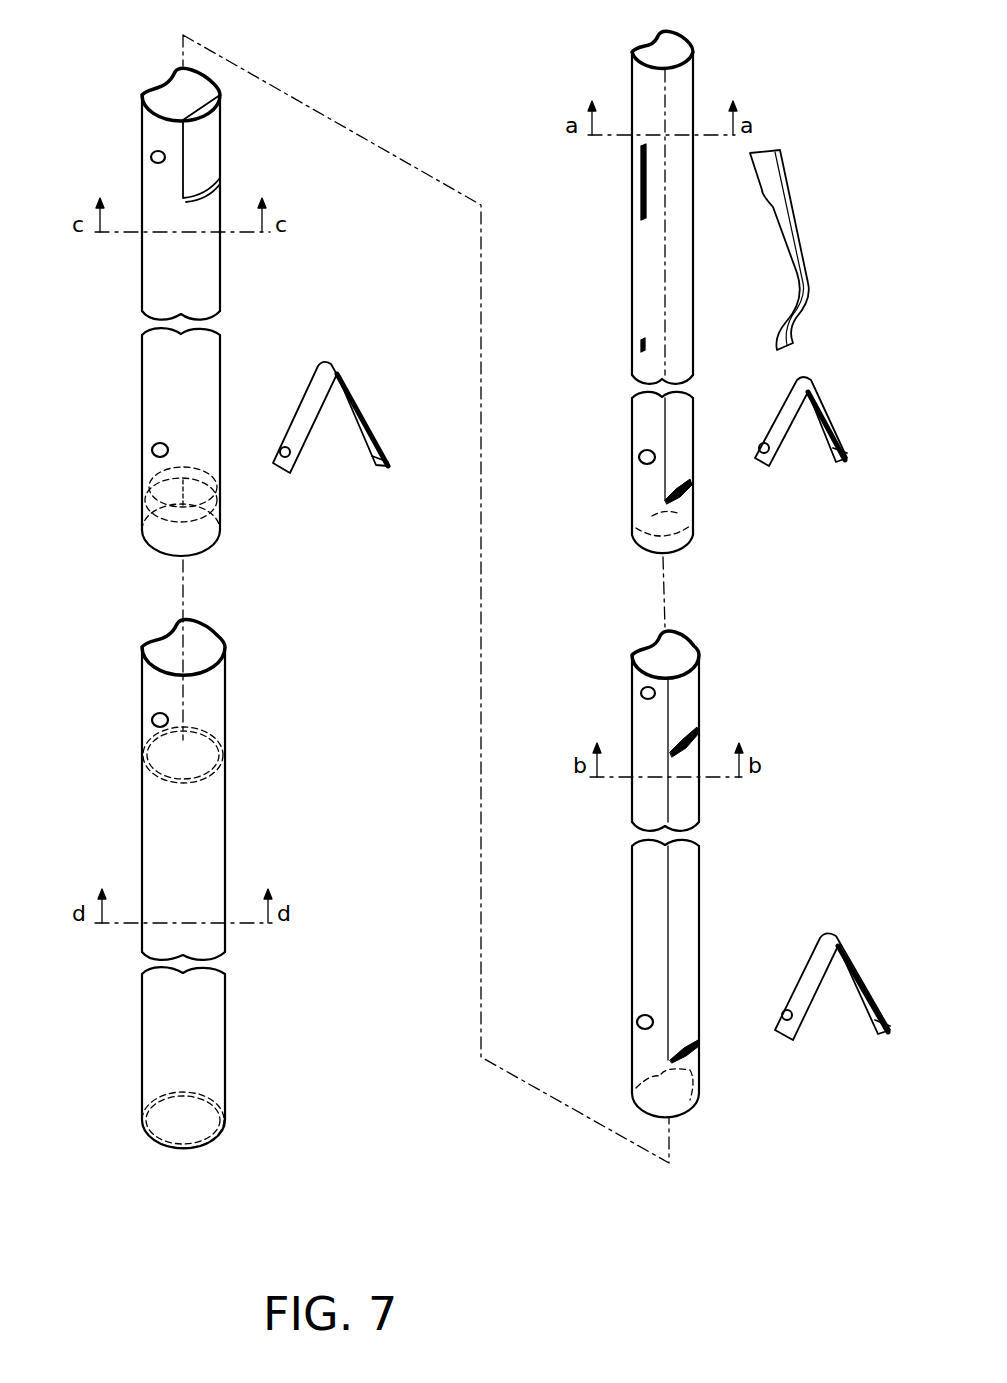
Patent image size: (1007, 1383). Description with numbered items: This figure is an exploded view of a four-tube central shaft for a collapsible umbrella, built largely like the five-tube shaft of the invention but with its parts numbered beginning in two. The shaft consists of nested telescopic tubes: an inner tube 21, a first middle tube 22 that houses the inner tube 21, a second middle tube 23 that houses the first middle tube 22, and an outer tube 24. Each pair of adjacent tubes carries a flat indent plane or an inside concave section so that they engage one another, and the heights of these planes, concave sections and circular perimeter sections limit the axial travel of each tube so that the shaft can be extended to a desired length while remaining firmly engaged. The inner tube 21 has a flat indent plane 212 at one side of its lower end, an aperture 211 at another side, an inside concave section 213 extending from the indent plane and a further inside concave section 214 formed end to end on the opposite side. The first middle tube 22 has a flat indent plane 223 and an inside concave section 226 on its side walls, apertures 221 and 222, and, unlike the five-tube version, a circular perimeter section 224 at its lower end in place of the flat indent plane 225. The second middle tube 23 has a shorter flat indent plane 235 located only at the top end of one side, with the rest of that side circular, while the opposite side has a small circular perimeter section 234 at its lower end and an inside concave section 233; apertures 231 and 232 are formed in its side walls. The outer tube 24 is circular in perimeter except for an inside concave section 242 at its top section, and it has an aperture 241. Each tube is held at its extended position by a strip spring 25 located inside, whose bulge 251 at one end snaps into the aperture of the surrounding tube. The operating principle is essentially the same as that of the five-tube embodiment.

The inner tube 21 is at (640, 263).
The aperture 211 is at (638, 458).
The flat indent plane 212 is at (645, 48).
The inside concave section 213 is at (690, 510).
The inside concave section 214 is at (690, 71).
The first middle tube 22 is at (638, 931).
The aperture 221 is at (640, 693).
The aperture 222 is at (637, 1019).
The flat indent plane 223 is at (650, 645).
The circular perimeter section 224 is at (700, 1072).
The flat indent plane 225 is at (690, 864).
The inside concave section 226 is at (690, 708).
The second middle tube 23 is at (150, 281).
The aperture 231 is at (150, 156).
The aperture 232 is at (150, 450).
The inside concave section 233 is at (158, 88).
The circular perimeter section 234 is at (148, 505).
The flat indent plane 235 is at (212, 148).
The outer tube 24 is at (150, 829).
The aperture 241 is at (151, 720).
The inside concave section 242 is at (160, 640).
The strip spring 25 is at (318, 372).
The bulge 251 is at (282, 448).